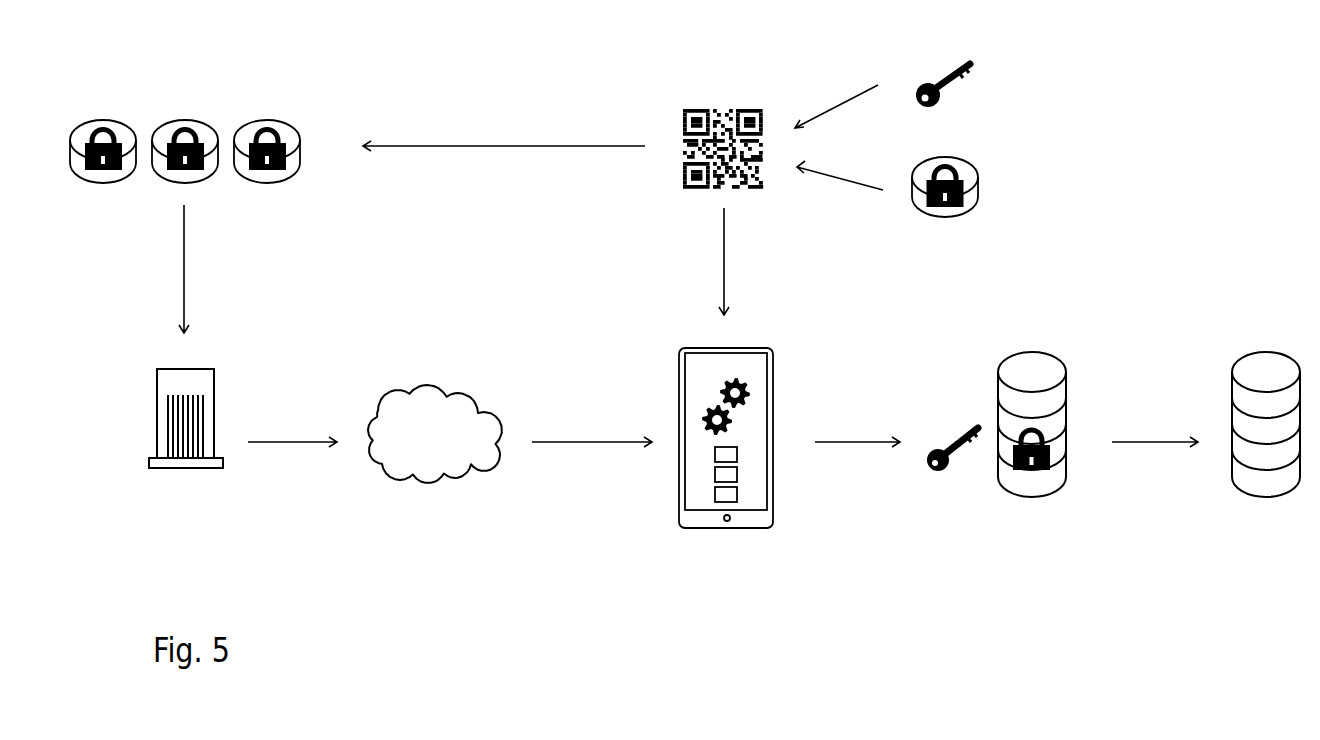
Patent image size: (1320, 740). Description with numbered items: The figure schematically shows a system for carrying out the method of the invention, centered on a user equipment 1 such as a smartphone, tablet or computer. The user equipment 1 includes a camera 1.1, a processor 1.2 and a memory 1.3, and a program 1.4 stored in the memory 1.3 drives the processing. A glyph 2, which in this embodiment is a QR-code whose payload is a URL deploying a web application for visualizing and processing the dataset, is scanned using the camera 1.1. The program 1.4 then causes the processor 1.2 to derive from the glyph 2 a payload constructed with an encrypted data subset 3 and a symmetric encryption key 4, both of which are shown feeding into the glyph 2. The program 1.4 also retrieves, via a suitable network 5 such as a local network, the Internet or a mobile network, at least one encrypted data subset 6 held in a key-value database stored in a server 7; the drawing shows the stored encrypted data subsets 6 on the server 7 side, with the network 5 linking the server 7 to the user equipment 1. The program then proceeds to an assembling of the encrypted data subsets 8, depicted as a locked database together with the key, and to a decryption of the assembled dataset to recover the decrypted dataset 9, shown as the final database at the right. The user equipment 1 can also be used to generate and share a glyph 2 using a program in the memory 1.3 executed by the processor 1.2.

The user equipment 1 is at (698, 548).
The camera 1.1 is at (740, 455).
The processor 1.2 is at (740, 475).
The memory 1.3 is at (740, 495).
The program 1.4 is at (705, 410).
The glyph 2 is at (727, 105).
The encrypted data subset 3 is at (978, 183).
The symmetric encryption key 4 is at (972, 62).
The network 5 is at (435, 434).
The encrypted data subset 6 is at (250, 110).
The server 7 is at (183, 468).
The assembled encrypted data subsets 8 is at (1030, 498).
The decrypted dataset 9 is at (1267, 498).